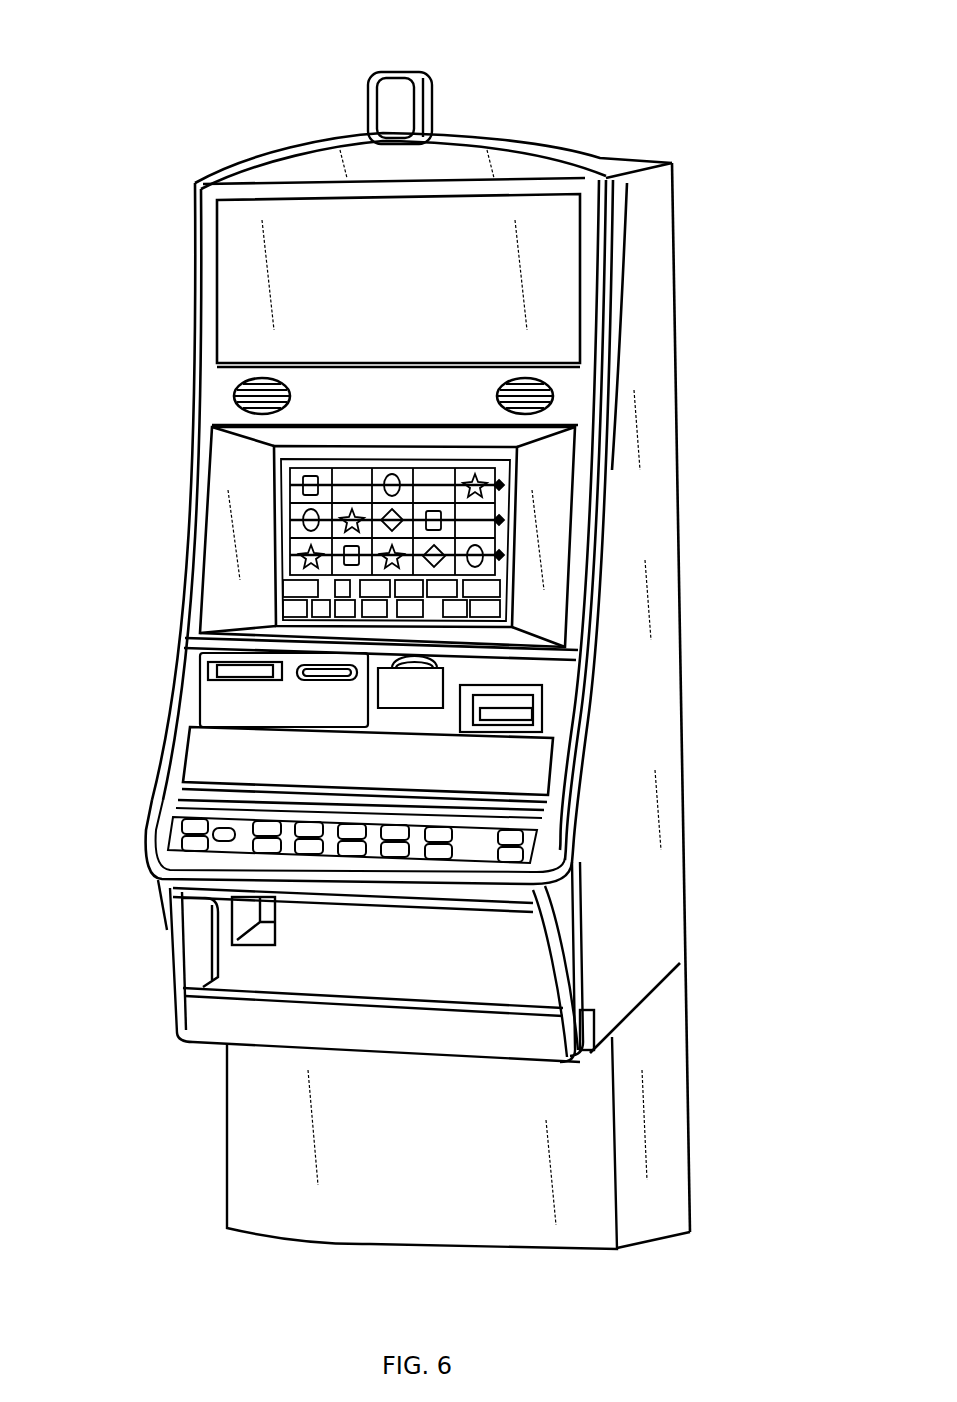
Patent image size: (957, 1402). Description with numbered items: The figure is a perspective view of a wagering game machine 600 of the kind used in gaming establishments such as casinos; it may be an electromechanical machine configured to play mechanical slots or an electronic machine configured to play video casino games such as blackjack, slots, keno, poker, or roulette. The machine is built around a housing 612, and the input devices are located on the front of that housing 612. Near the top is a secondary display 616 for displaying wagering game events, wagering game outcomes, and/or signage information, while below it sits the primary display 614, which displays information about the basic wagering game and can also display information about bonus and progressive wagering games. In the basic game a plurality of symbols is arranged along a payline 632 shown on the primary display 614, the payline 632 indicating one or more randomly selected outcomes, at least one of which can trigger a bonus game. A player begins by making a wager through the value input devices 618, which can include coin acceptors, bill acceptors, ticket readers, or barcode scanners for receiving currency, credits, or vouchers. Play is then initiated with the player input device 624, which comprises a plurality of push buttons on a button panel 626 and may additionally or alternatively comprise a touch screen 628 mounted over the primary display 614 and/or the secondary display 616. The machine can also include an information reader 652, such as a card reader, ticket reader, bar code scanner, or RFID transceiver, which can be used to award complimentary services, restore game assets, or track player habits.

The wagering game machine 600 is at (158, 30).
The housing 612 is at (664, 245).
The primary display 614 is at (267, 543).
The secondary display 616 is at (267, 278).
The value input devices 618 is at (443, 672).
The player input device 624 is at (533, 840).
The button panel 626 is at (253, 843).
The touch screen 628 is at (513, 612).
The payline 632 is at (281, 488).
The information reader 652 is at (297, 677).